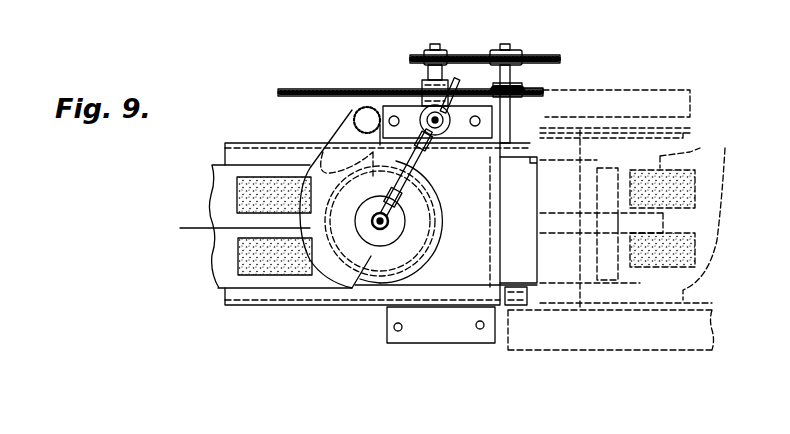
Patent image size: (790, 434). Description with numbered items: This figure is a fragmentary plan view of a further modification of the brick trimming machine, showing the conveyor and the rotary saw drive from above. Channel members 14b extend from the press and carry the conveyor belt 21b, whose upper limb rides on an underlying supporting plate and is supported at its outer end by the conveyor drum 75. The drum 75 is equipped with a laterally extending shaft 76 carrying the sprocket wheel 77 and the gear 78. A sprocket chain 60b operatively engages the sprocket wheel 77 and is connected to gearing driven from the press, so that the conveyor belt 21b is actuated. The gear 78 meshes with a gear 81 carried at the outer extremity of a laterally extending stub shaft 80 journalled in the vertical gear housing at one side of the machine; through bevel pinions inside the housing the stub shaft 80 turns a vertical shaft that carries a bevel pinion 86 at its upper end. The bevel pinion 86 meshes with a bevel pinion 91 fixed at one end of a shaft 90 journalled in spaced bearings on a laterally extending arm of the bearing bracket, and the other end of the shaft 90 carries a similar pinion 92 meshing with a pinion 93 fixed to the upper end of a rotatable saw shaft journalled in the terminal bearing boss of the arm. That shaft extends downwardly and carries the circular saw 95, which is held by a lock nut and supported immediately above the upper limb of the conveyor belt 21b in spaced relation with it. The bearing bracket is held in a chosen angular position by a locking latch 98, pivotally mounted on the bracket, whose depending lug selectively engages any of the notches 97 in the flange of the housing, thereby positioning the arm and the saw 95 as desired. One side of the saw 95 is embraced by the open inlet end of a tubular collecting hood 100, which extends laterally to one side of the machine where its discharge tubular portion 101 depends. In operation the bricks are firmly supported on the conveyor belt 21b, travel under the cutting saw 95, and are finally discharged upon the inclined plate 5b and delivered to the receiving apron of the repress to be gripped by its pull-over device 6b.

The inclined plate 5b is at (605, 158).
The pull-over device 6b is at (692, 152).
The channel members 14b is at (268, 143).
The conveyor belt 21b is at (467, 287).
The sprocket chain 60b is at (283, 91).
The conveyor drum 75 is at (533, 283).
The shaft 76 is at (523, 108).
The sprocket wheel 77 is at (525, 88).
The gear 78 is at (550, 55).
The stub shaft 80 is at (433, 45).
The gear 81 is at (452, 57).
The bevel pinion 86 is at (420, 108).
The shaft 90 is at (433, 170).
The bevel pinion 91 is at (438, 148).
The pinion 92 is at (398, 228).
The pinion 93 is at (400, 240).
The circular saw 95 is at (420, 218).
The notches 97 is at (402, 97).
The locking latch 98 is at (448, 110).
The tubular collecting hood 100 is at (245, 226).
The discharge tubular portion 101 is at (352, 110).